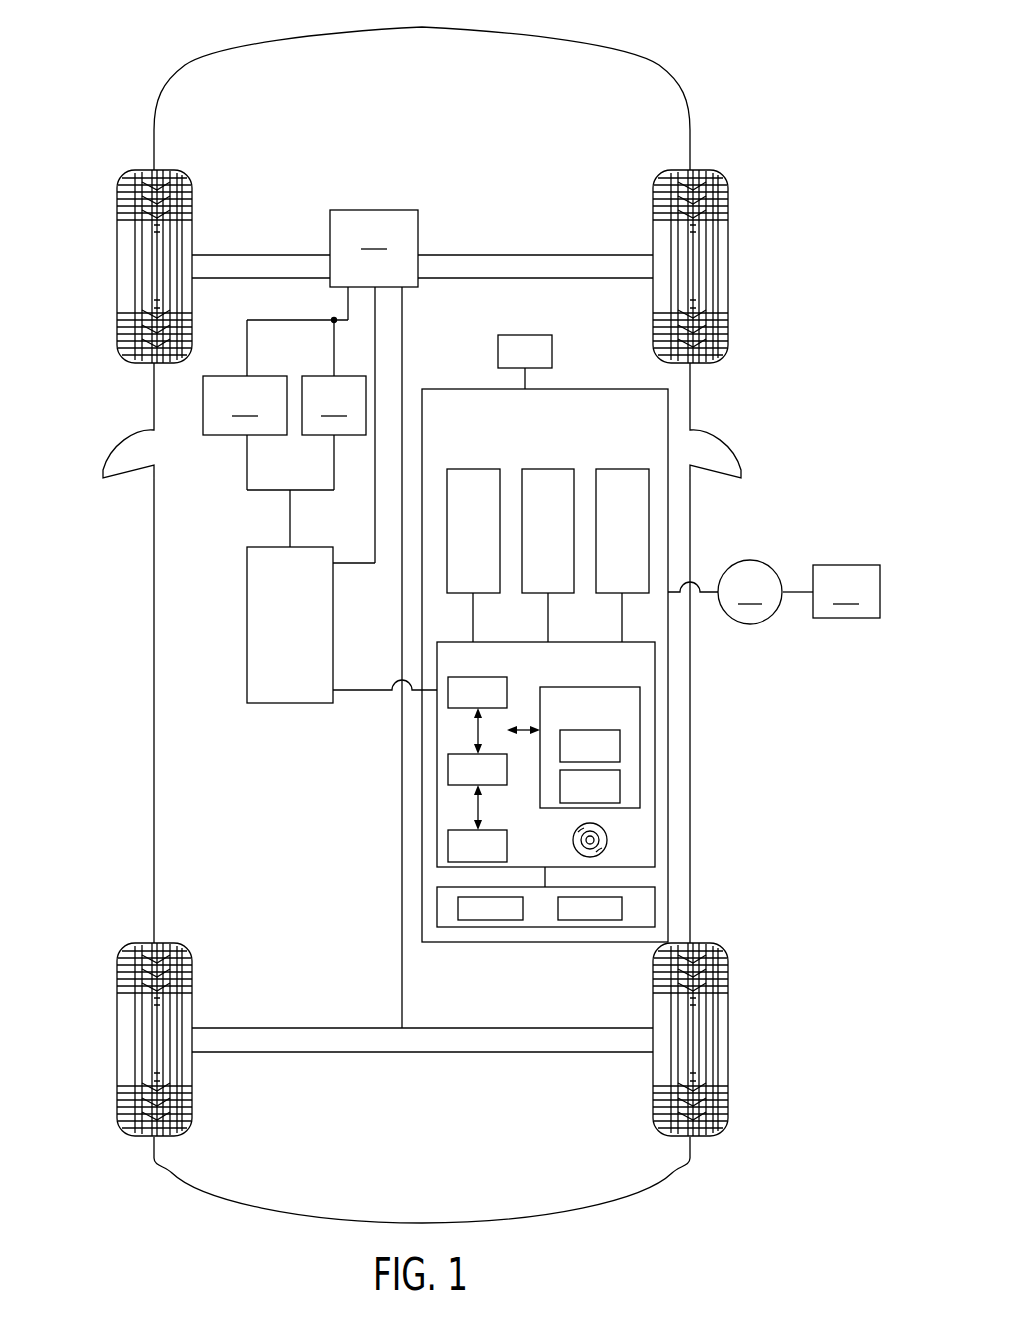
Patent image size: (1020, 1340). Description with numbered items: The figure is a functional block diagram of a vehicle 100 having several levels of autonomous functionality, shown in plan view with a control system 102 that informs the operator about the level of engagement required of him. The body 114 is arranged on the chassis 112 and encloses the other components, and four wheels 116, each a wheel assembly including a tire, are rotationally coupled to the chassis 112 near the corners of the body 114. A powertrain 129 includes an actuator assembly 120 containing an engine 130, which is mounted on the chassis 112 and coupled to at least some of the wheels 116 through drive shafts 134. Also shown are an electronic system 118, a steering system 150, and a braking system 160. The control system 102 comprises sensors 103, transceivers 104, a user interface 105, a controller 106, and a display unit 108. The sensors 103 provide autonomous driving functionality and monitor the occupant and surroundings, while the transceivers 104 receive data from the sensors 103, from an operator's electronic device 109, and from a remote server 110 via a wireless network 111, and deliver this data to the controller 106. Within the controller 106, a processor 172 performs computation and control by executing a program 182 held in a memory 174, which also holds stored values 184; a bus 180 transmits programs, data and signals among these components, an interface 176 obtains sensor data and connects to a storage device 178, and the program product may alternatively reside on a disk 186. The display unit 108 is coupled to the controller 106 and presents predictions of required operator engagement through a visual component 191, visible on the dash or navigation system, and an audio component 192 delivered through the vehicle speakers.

The vehicle 100 is at (695, 66).
The control system 102 is at (668, 415).
The sensors 103 is at (473, 468).
The transceivers 104 is at (548, 468).
The user interface 105 is at (622, 468).
The controller 106 is at (655, 656).
The display unit 108 is at (655, 907).
The operator's electronic device 109 is at (552, 350).
The remote server 110 is at (846, 591).
The wireless network 111 is at (750, 592).
The chassis 112 is at (390, 979).
The body 114 is at (153, 690).
The wheels 116 is at (117, 268).
The electronic system 118 is at (247, 627).
The actuator assembly 120 is at (415, 300).
The powertrain 129 is at (372, 210).
The engine 130 is at (374, 248).
The drive shafts 134 is at (247, 254).
The steering system 150 is at (245, 405).
The braking system 160 is at (334, 405).
The processor 172 is at (448, 692).
The memory 174 is at (640, 705).
The interface 176 is at (448, 768).
The storage device 178 is at (448, 845).
The bus 180 is at (473, 729).
The program 182 is at (620, 746).
The stored values 184 is at (620, 788).
The disk 186 is at (607, 840).
The visual component 191 is at (458, 907).
The audio component 192 is at (585, 921).